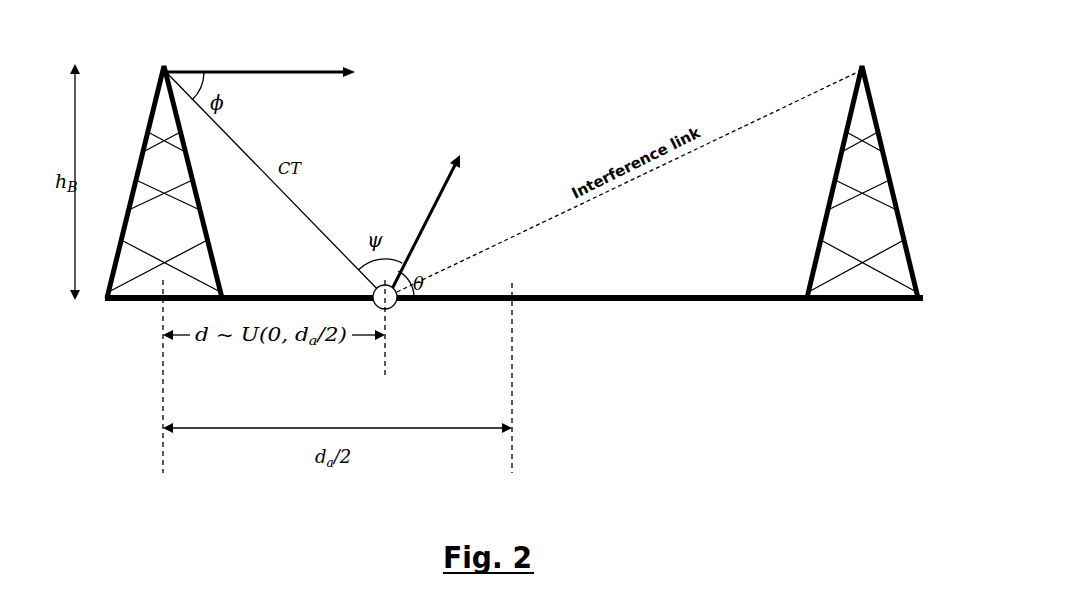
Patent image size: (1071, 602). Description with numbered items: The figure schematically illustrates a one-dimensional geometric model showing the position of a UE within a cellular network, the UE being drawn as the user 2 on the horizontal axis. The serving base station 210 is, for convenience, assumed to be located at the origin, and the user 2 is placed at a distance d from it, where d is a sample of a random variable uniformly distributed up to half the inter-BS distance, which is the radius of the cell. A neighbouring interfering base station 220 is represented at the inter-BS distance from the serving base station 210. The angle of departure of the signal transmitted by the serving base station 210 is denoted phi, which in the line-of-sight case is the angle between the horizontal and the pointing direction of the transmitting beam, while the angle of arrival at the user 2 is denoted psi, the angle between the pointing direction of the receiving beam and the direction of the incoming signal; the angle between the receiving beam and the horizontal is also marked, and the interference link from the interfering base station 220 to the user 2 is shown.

The serving base station 210 is at (127, 273).
The interfering base station 220 is at (892, 265).
The user (unnumbered in drawing; figure 2 user node) 2 is at (358, 294).